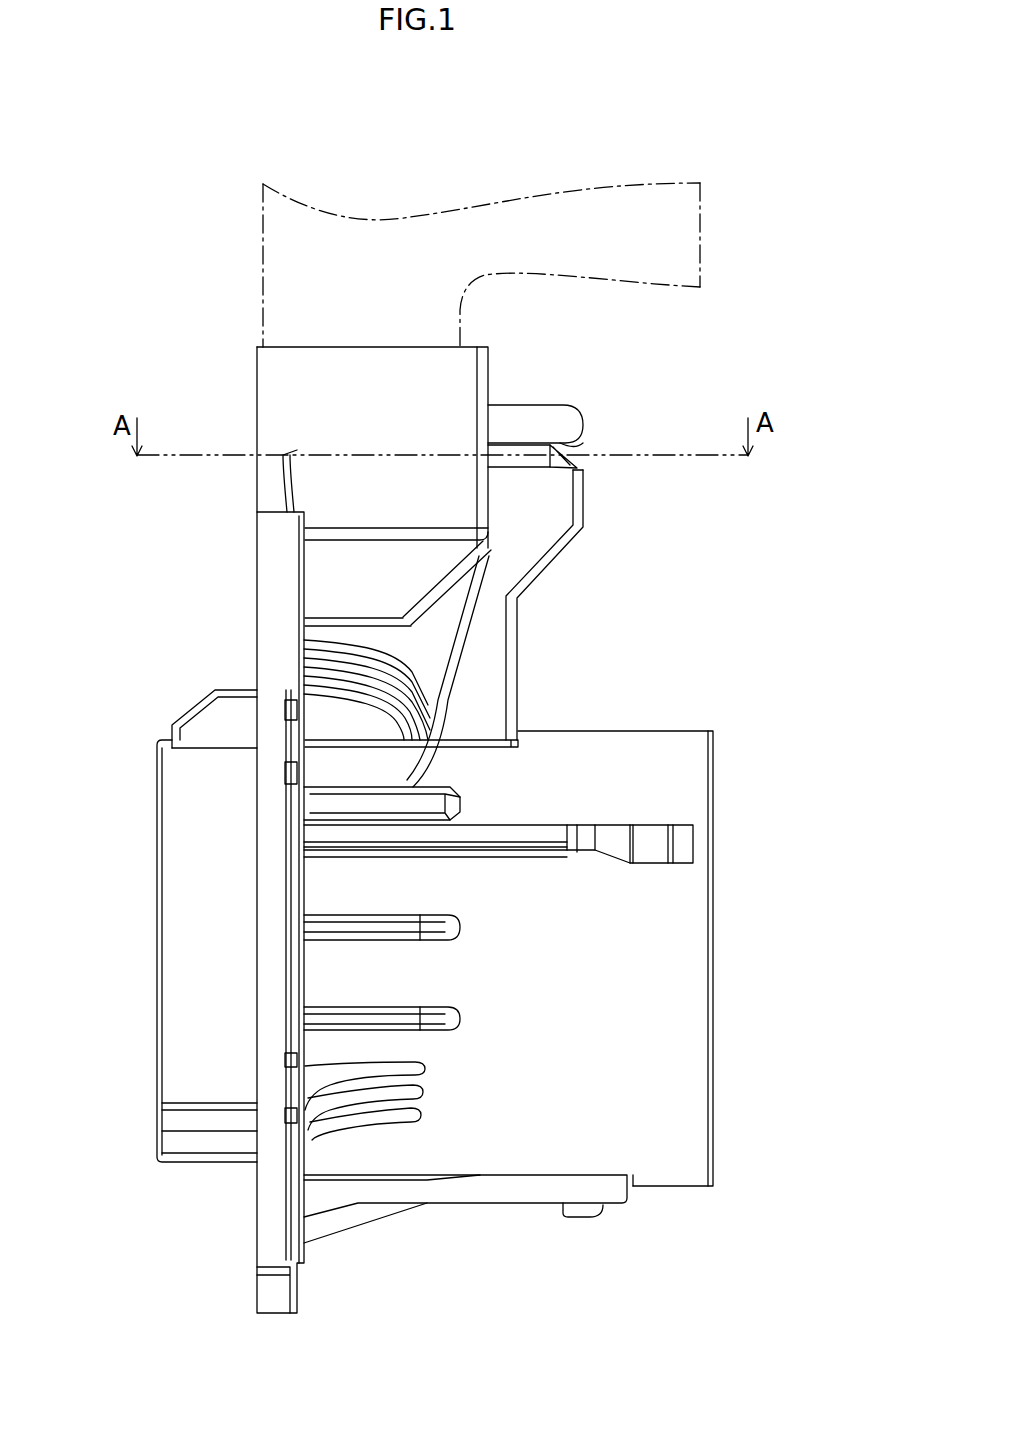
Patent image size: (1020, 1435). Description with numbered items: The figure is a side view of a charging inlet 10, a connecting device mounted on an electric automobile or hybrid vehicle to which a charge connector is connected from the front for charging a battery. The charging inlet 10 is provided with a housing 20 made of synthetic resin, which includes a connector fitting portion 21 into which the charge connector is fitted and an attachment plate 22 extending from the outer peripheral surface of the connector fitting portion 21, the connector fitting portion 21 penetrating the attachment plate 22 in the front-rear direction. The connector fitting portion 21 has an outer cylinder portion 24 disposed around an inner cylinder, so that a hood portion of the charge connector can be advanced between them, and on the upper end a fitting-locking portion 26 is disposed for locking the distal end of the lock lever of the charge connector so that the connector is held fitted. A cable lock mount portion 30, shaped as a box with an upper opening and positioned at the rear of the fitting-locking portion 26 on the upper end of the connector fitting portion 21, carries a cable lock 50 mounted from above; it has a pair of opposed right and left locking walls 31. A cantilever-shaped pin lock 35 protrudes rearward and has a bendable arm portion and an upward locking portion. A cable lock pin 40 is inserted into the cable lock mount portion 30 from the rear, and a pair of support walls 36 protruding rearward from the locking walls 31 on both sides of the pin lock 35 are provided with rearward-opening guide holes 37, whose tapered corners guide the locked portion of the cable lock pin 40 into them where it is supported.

The charging inlet 10 is at (437, 164).
The housing 20 is at (651, 597).
The connector fitting portion 21 is at (677, 732).
The attachment plate 22 is at (272, 541).
The outer cylinder portion 24 is at (190, 860).
The fitting-locking portion 26 is at (207, 720).
The cable lock mount portion 30 is at (222, 351).
The locking wall 31 is at (402, 352).
The pin lock 35 is at (575, 458).
The support wall 36 is at (568, 510).
The guide hole 37 is at (575, 448).
The cable lock pin 40 is at (517, 440).
The cable lock 50 is at (705, 246).